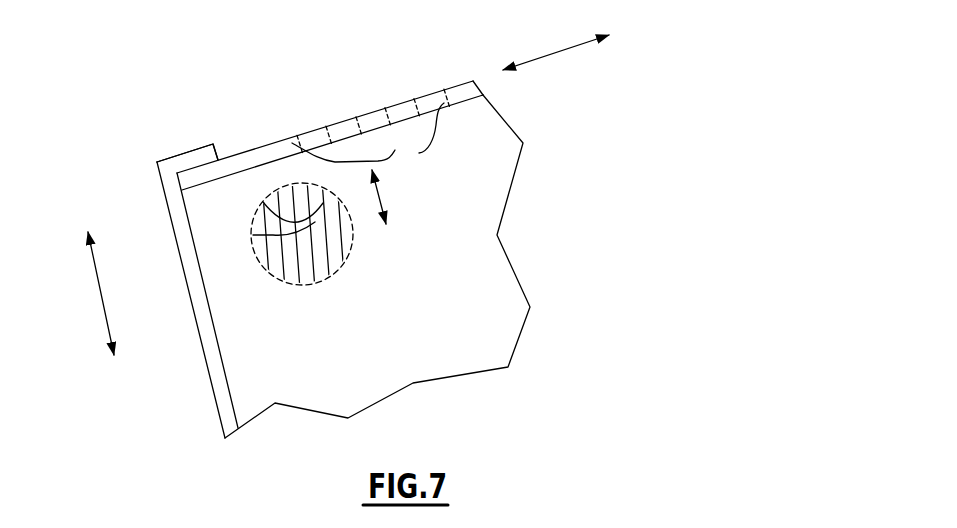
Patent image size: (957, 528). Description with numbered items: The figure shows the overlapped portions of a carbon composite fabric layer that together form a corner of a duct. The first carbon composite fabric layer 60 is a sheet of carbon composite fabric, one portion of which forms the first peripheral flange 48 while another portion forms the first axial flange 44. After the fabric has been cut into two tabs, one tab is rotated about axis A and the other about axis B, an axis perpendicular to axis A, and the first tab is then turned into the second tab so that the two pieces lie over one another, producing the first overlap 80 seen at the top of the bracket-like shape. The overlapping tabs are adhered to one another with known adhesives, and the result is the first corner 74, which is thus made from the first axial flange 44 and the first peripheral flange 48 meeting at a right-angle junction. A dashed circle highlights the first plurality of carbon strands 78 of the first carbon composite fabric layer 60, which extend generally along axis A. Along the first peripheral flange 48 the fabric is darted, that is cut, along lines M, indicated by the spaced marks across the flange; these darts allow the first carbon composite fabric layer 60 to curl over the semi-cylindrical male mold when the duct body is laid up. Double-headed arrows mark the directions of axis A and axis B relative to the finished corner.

The first axial flange 44 is at (207, 302).
The first peripheral flange 48 is at (340, 133).
The first carbon composite fabric layer 60 is at (417, 292).
The first corner 74 is at (149, 144).
The first plurality of carbon strands 78 is at (263, 202).
The first overlap 80 is at (193, 146).
The axis A is at (95, 280).
The axis B is at (501, 125).
The lines M is at (368, 135).